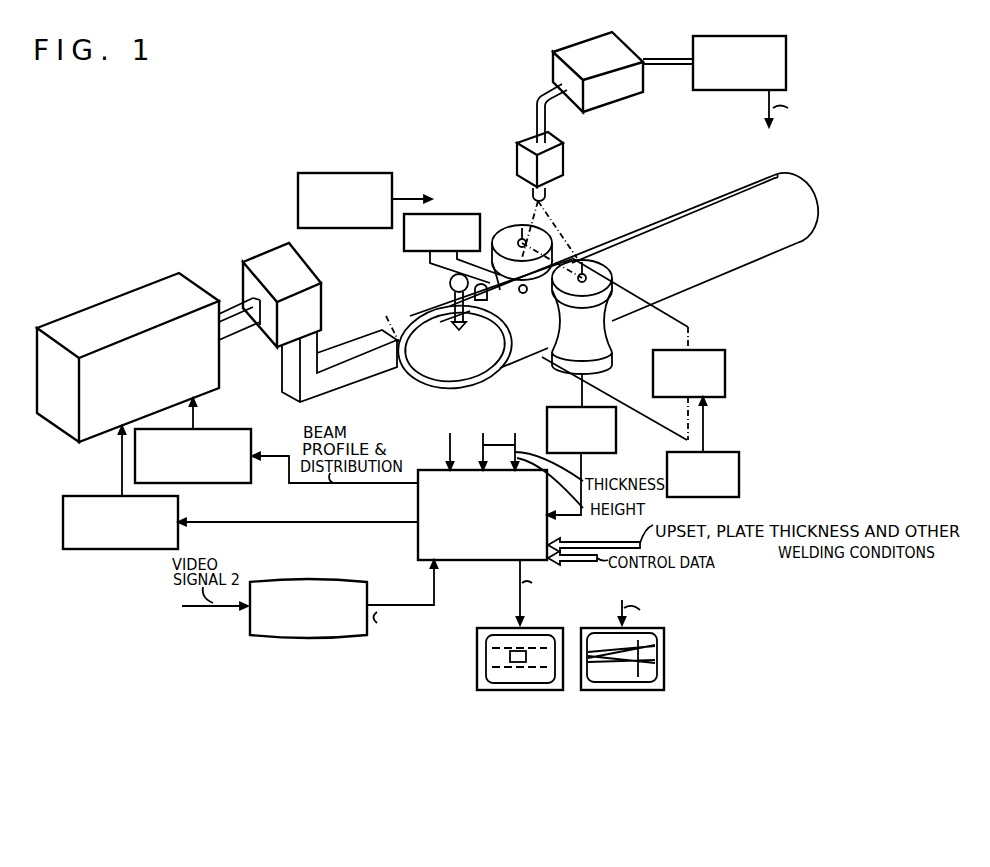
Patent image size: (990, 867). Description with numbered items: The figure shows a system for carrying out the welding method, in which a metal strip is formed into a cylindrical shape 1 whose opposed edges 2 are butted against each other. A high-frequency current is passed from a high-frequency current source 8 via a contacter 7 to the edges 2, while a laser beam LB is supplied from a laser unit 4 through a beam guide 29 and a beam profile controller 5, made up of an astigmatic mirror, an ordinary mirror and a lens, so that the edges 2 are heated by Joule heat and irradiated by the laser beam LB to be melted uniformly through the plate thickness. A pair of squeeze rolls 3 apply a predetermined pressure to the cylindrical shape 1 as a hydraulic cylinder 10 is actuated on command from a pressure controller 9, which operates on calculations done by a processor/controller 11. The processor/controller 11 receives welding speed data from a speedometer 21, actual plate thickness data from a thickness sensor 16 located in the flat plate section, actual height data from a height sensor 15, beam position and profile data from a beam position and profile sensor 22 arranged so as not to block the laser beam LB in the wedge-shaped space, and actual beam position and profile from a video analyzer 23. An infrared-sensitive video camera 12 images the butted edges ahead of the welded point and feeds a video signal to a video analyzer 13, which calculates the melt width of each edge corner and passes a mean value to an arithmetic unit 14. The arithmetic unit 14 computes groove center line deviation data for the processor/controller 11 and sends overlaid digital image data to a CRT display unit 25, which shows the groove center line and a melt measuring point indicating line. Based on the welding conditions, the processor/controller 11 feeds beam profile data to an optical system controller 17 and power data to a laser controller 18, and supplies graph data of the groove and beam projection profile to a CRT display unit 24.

The cylindrical shape 1 is at (422, 385).
The edges 2 is at (455, 335).
The squeeze rolls 3 is at (512, 222).
The laser unit 4 is at (117, 298).
The beam profile controller 5 is at (267, 248).
The contacter 7 is at (527, 292).
The high-frequency current source 8 is at (403, 247).
The pressure controller 9 is at (739, 475).
The hydraulic cylinder 10 is at (725, 373).
The processor/controller 11 is at (463, 207).
The video camera 12 is at (563, 153).
The video analyzer 13 is at (588, 37).
The arithmetic unit 14 is at (739, 33).
The height sensor 15 is at (487, 294).
The thickness sensor 16 is at (347, 172).
The optical system controller 17 is at (230, 427).
The laser controller 18 is at (63, 523).
The speedometer 21 is at (616, 440).
The beam position and profile sensor 22 is at (448, 283).
The video analyzer 23 is at (307, 638).
The CRT display unit 24 is at (477, 668).
The CRT display unit 25 is at (783, 155).
The beam guide 29 is at (348, 348).
The laser beam LB is at (388, 320).